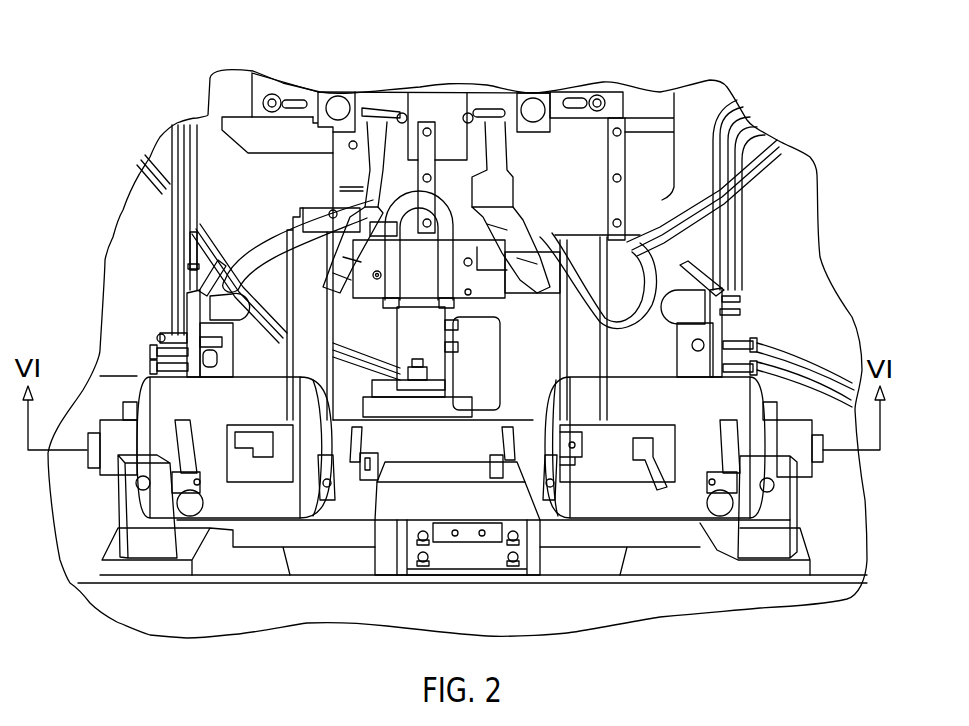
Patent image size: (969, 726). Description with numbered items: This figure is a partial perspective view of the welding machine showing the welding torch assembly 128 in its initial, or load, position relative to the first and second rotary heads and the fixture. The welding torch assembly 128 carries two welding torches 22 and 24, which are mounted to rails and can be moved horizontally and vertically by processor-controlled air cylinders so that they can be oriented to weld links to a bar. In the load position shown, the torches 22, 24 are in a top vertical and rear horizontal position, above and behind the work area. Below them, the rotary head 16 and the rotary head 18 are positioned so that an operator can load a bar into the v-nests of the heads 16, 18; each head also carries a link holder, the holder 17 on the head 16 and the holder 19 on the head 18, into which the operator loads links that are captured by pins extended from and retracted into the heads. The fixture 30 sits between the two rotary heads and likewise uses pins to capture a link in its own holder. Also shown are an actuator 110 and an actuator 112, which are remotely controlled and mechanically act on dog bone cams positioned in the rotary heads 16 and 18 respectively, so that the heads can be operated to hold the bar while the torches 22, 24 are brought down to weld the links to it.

The welding torch assembly 128 is at (498, 76).
The torch 22 is at (332, 205).
The torch 24 is at (513, 207).
The actuator 110 is at (187, 273).
The actuator 112 is at (725, 262).
The rotary head 16 is at (263, 503).
The holder 17 is at (338, 497).
The rotary head 18 is at (630, 500).
The holder 19 is at (547, 482).
The fixture 30 is at (455, 465).